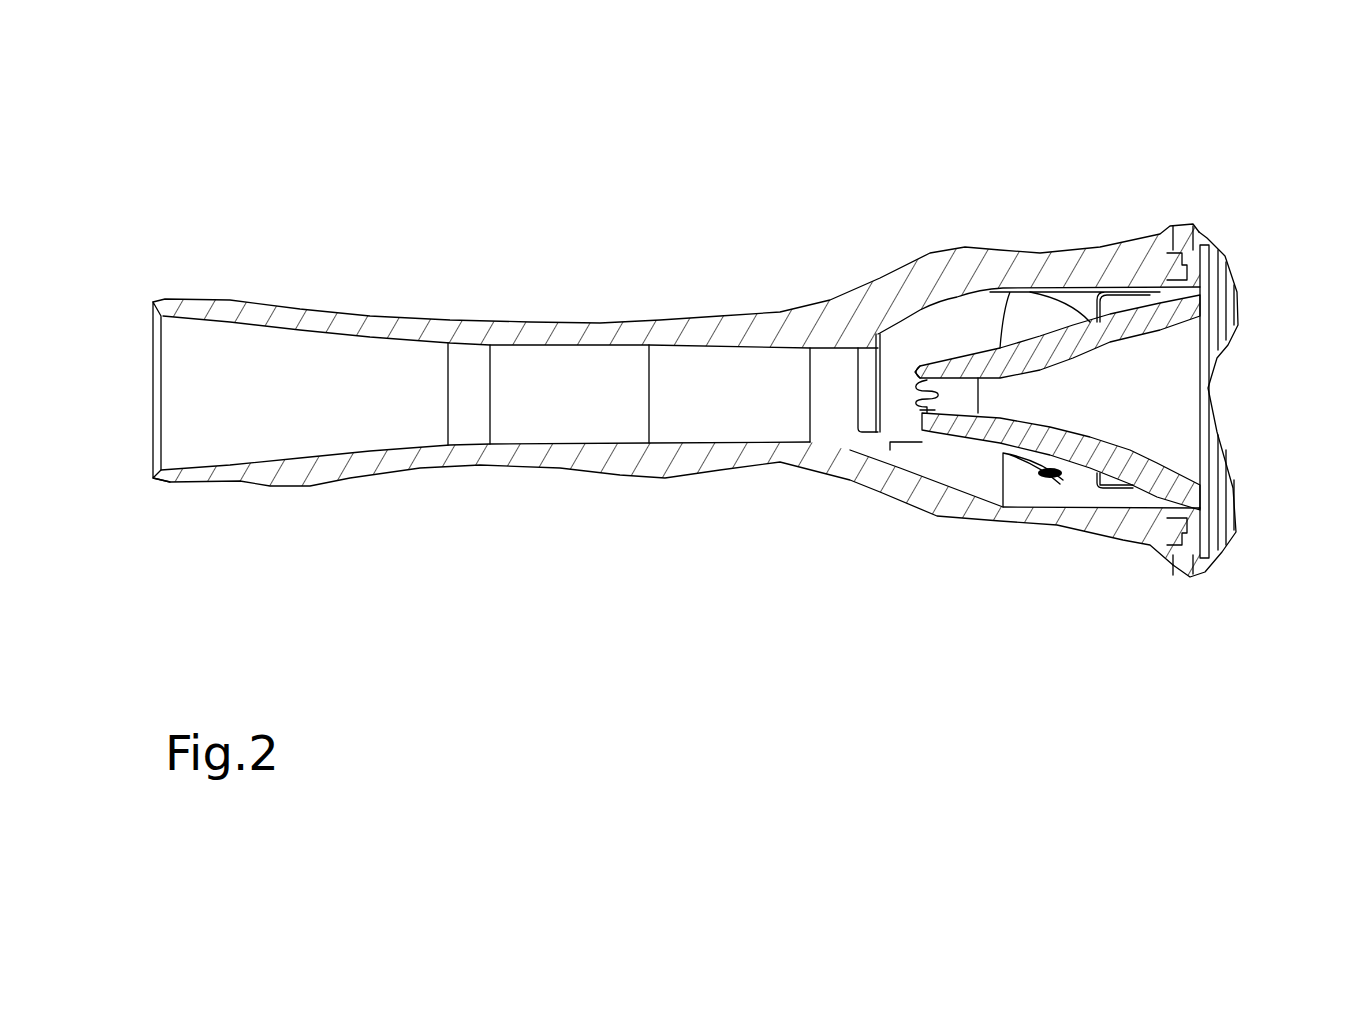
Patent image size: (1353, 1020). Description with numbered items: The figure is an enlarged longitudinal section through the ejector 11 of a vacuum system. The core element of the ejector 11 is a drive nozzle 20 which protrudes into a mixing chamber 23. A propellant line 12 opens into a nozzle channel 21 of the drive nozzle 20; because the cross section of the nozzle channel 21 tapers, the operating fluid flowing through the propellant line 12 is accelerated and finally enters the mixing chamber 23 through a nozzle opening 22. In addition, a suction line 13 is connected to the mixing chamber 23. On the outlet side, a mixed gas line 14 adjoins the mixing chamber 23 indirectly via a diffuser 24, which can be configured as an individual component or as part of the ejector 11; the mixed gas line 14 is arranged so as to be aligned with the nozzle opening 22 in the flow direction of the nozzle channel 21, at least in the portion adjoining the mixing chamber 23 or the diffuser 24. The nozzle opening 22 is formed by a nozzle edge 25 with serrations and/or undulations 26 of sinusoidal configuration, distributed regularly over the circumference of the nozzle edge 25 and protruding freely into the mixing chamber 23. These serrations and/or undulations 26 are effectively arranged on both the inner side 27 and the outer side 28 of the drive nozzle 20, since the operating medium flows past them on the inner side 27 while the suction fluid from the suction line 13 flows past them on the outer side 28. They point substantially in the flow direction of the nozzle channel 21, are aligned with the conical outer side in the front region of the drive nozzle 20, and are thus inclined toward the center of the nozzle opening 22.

The ejector 11 is at (541, 166).
The propellant line 12 is at (1167, 397).
The suction line 13 is at (1062, 312).
The mixed gas line 14 is at (121, 401).
The drive nozzle 20 is at (1024, 356).
The nozzle channel 21 is at (960, 292).
The nozzle opening 22 is at (916, 382).
The mixing chamber 23 is at (905, 463).
The diffuser 24 is at (268, 460).
The nozzle edge 25 is at (882, 448).
The serrations and/or undulations 26 is at (921, 422).
The inner side 27 is at (1200, 322).
The outer side 28 is at (1093, 470).